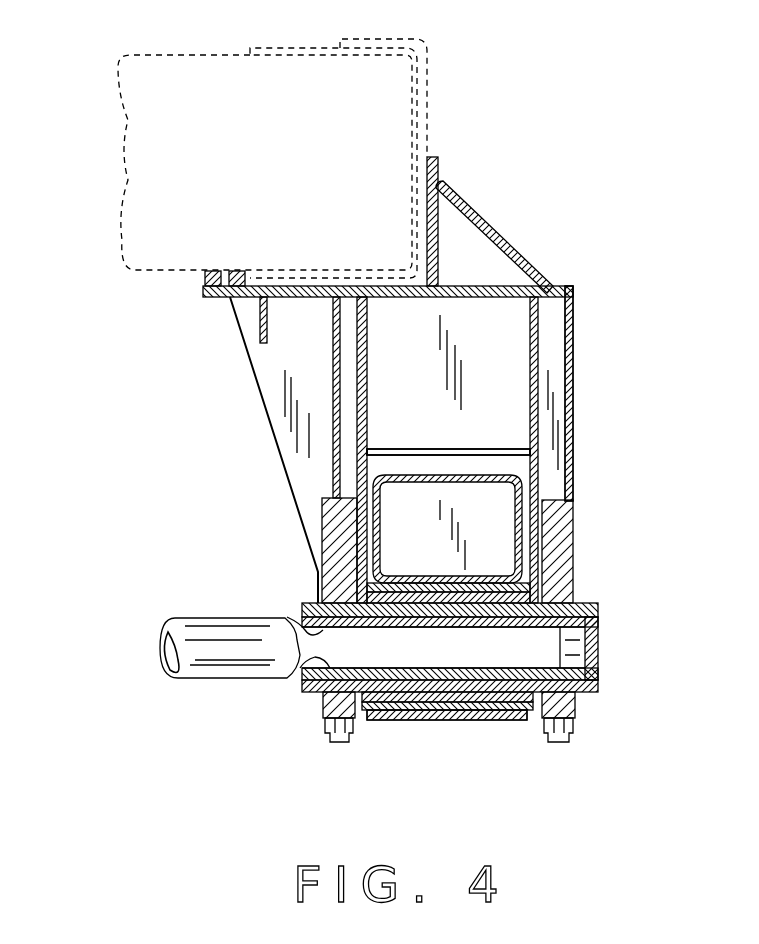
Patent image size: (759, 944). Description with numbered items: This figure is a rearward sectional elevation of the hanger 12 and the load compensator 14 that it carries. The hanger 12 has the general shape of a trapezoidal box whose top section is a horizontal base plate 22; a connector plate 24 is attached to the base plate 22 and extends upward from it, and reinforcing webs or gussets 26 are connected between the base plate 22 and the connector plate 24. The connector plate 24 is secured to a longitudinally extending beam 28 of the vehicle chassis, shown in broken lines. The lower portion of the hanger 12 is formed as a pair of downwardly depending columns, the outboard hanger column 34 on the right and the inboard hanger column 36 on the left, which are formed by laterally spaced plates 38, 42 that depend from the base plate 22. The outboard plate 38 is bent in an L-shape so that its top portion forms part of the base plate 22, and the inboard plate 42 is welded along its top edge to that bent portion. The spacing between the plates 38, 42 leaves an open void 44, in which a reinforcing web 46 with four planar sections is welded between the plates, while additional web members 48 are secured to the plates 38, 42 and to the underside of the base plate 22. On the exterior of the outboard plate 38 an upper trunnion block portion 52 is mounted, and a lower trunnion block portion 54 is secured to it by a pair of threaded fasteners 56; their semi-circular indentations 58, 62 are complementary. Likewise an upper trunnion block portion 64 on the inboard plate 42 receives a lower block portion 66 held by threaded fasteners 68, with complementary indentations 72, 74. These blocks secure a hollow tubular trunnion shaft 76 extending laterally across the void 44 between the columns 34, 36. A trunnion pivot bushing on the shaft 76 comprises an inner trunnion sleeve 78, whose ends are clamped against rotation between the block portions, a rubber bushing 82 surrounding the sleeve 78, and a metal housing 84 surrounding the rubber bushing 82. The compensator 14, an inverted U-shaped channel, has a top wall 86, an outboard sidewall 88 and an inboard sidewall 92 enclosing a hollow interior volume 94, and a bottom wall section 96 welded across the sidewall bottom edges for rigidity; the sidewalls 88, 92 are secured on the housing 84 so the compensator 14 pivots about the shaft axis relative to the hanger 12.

The hanger 12 is at (584, 408).
The load compensator 14 is at (540, 463).
The base plate 22 is at (480, 286).
The connector plate 24 is at (437, 172).
The reinforcing webs or gussets 26 is at (483, 220).
The beam 28 is at (430, 85).
The outboard hanger column 34 is at (578, 440).
The inboard hanger column 36 is at (328, 440).
The outboard plate 38 is at (530, 323).
The inboard plate 42 is at (357, 366).
The open void 44 is at (456, 465).
The reinforcing web 46 is at (505, 392).
The web members 48 is at (333, 403).
The upper portion of trunnion block 52 is at (578, 527).
The lower portion of trunnion block 54 is at (578, 705).
The threaded fasteners 56 is at (556, 740).
The semi-circular indentation 58 is at (580, 605).
The semi-circular indentation 62 is at (572, 672).
The upper portion of trunnion block 64 is at (330, 515).
The lower portion of trunnion block 66 is at (323, 707).
The threaded fasteners 68 is at (325, 737).
The semi-circular indentation 72 is at (283, 623).
The semi-circular indentation 74 is at (295, 673).
The trunnion pivot pin or shaft 76 is at (187, 616).
The inner trunnion sleeve 78 is at (425, 704).
The rubber bushing 82 is at (482, 710).
The metal sleeve or housing 84 is at (510, 708).
The top wall 86 is at (408, 449).
The outboard sidewall 88 is at (545, 502).
The inboard sidewall 92 is at (367, 512).
The hollow interior volume 94 is at (432, 526).
The bottom wall section 96 is at (383, 722).